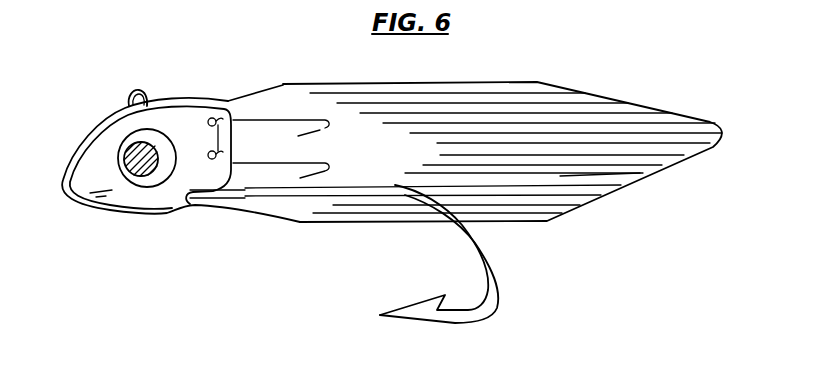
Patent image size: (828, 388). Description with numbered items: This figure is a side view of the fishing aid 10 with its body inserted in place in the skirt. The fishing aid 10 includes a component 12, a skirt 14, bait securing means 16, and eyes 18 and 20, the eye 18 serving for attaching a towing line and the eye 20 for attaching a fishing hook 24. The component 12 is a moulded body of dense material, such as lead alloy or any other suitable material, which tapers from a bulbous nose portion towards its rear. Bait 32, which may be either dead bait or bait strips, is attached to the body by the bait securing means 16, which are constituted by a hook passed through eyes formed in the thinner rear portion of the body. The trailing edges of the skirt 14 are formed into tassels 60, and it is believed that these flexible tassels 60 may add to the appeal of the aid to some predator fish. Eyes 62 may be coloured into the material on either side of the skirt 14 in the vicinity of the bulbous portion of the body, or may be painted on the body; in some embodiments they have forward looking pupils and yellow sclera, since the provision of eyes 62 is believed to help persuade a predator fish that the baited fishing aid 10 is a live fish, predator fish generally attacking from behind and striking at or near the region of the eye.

The fishing aid 10 is at (175, 222).
The component 12 is at (97, 137).
The skirt 14 is at (258, 107).
The bait securing means 16 is at (231, 100).
The eye 18 is at (134, 89).
The eye 20 is at (193, 210).
The fishing hook 24 is at (495, 287).
The bait 32 is at (385, 141).
The tassels 60 is at (583, 173).
The eyes 62 is at (129, 180).